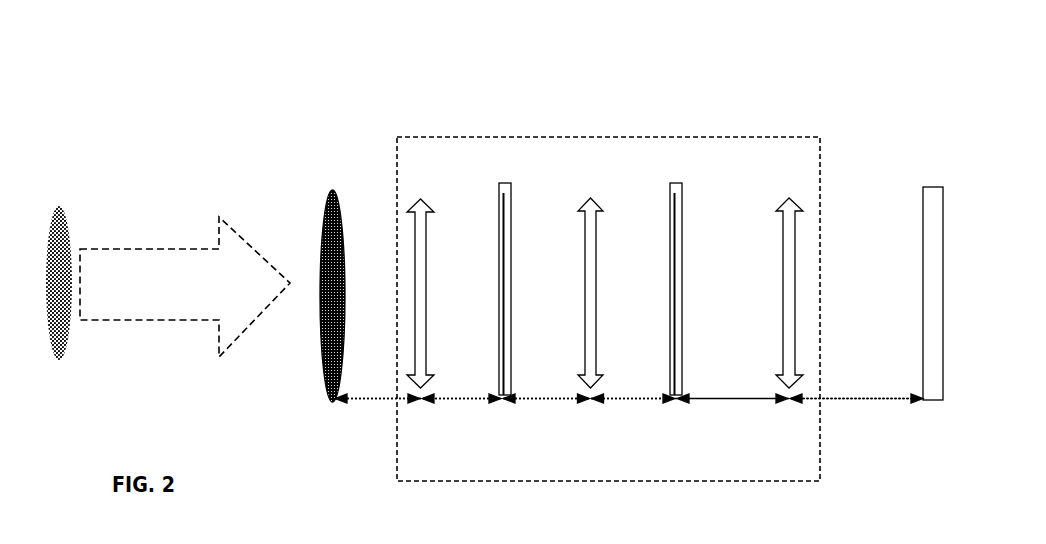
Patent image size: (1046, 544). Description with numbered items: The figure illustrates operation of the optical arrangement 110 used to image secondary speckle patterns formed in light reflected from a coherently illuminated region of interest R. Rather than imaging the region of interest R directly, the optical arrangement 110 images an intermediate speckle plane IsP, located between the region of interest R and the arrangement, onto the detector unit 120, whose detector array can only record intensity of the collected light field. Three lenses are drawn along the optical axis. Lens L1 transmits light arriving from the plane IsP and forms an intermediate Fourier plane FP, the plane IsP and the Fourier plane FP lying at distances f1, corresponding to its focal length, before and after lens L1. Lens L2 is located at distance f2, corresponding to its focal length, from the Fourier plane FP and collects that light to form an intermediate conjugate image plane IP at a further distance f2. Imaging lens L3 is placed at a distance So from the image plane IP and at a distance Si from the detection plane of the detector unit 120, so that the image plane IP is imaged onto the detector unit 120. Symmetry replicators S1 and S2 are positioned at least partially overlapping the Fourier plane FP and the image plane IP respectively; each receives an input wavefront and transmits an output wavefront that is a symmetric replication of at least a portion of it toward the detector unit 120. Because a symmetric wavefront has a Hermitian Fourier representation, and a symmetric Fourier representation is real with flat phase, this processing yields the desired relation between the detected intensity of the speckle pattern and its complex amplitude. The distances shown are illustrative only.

The region of interest R is at (59, 300).
The intermediate speckle plane IsP is at (333, 313).
The optical arrangement 110 is at (608, 292).
The lens L1 is at (420, 316).
The symmetry replicator S1 is at (501, 272).
The intermediate Fourier plane FP is at (503, 413).
The lens L2 is at (590, 315).
The symmetry replicator S2 is at (676, 272).
The intermediate image plane IP is at (674, 413).
The imaging lens L3 is at (789, 315).
The detector unit 120 is at (936, 309).
The focal length of lens L1 f1 is at (418, 426).
The focal length of lens L2 f2 is at (589, 426).
The object distance So is at (732, 426).
The image distance Si is at (856, 426).